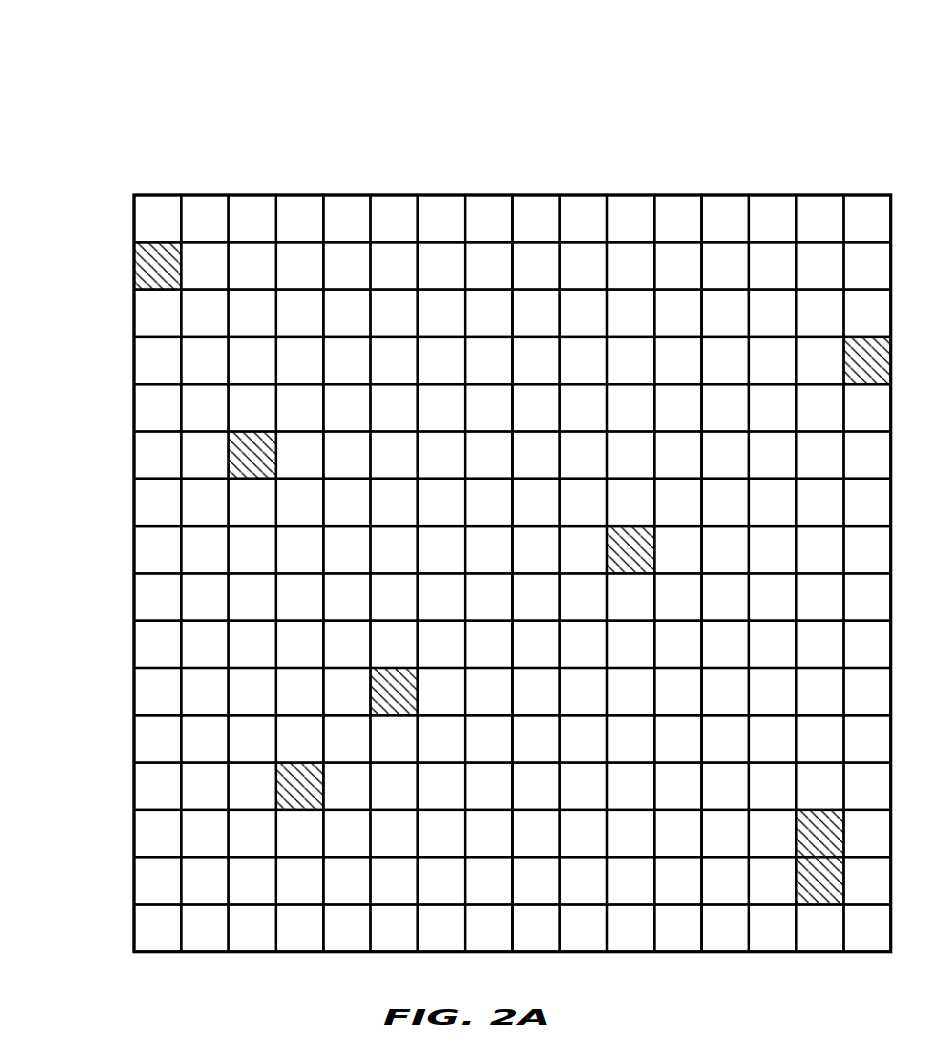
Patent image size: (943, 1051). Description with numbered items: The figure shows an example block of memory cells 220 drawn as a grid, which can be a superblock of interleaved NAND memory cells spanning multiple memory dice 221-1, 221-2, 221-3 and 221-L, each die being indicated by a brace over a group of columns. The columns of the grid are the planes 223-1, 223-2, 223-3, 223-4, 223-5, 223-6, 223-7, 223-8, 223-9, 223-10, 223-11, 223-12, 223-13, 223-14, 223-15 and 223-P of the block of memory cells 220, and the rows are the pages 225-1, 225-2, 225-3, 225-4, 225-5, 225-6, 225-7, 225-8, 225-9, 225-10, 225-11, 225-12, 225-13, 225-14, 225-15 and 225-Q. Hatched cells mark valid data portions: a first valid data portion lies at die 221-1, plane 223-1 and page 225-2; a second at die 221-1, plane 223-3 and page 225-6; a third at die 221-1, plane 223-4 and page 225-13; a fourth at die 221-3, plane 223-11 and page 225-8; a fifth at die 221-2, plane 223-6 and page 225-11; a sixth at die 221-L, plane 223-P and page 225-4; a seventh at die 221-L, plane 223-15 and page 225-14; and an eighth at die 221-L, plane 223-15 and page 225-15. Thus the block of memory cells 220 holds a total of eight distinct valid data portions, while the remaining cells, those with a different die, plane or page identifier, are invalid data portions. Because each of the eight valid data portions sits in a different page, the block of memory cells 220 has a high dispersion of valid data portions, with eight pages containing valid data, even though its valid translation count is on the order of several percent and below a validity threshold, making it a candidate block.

The block of memory cells 220 is at (108, 54).
The memory die 221-1 is at (134, 92).
The memory die 221-2 is at (323, 92).
The memory die 221-3 is at (512, 92).
The memory die 221-L is at (891, 92).
The plane 223-1 is at (156, 195).
The plane 223-2 is at (204, 195).
The plane 223-3 is at (250, 195).
The plane 223-4 is at (298, 195).
The plane 223-5 is at (345, 195).
The plane 223-6 is at (393, 195).
The plane 223-7 is at (439, 195).
The plane 223-8 is at (488, 195).
The plane 223-9 is at (534, 195).
The plane 223-10 is at (582, 195).
The plane 223-11 is at (629, 195).
The plane 223-12 is at (677, 195).
The plane 223-13 is at (723, 195).
The plane 223-14 is at (772, 195).
The plane 223-15 is at (818, 195).
The plane 223-P is at (866, 195).
The page 225-1 is at (134, 222).
The page 225-2 is at (134, 270).
The page 225-3 is at (134, 317).
The page 225-4 is at (134, 364).
The page 225-5 is at (134, 412).
The page 225-6 is at (134, 459).
The page 225-7 is at (134, 506).
The page 225-8 is at (134, 554).
The page 225-9 is at (134, 601).
The page 225-10 is at (134, 648).
The page 225-11 is at (134, 695).
The page 225-12 is at (134, 742).
The page 225-13 is at (134, 790).
The page 225-14 is at (134, 837).
The page 225-15 is at (134, 884).
The page 225-Q is at (134, 932).